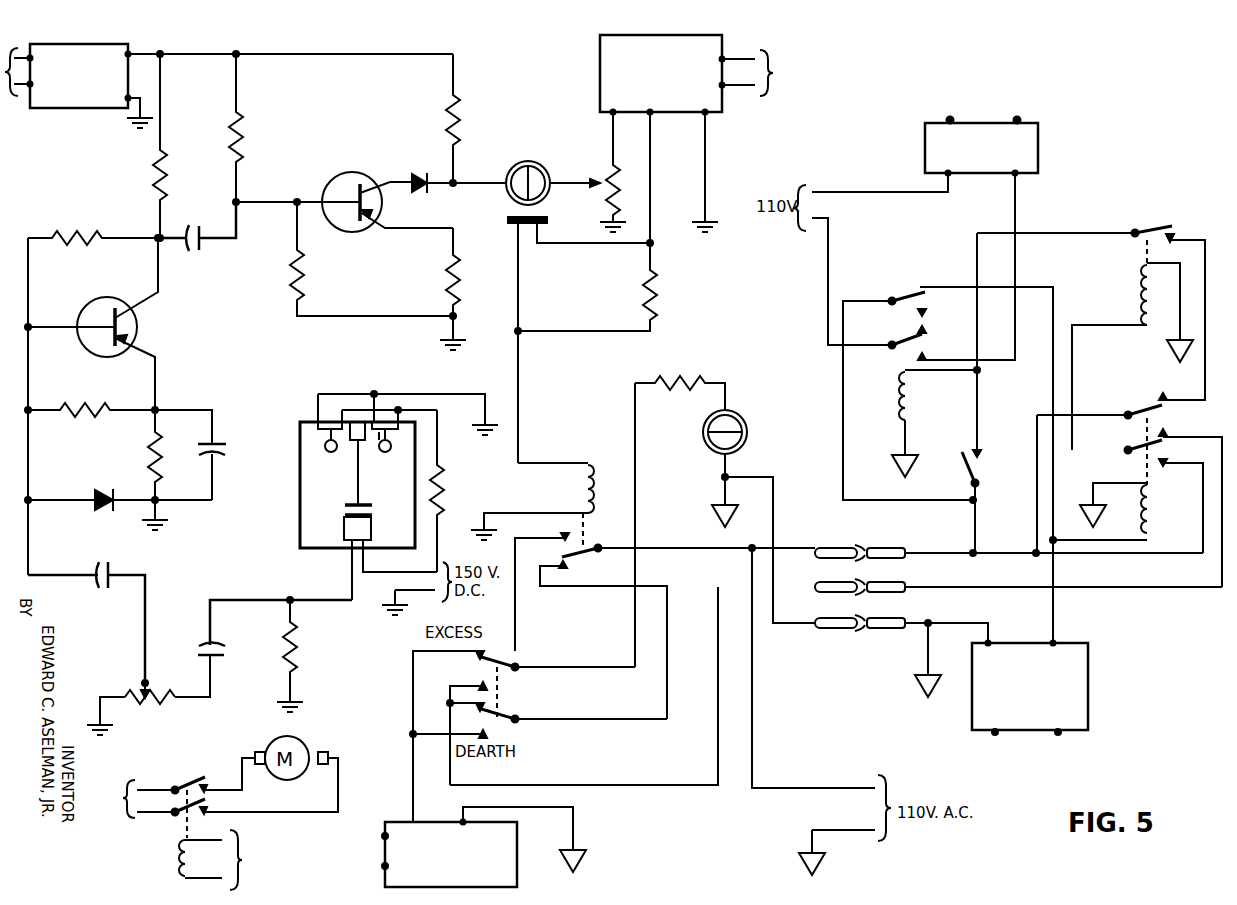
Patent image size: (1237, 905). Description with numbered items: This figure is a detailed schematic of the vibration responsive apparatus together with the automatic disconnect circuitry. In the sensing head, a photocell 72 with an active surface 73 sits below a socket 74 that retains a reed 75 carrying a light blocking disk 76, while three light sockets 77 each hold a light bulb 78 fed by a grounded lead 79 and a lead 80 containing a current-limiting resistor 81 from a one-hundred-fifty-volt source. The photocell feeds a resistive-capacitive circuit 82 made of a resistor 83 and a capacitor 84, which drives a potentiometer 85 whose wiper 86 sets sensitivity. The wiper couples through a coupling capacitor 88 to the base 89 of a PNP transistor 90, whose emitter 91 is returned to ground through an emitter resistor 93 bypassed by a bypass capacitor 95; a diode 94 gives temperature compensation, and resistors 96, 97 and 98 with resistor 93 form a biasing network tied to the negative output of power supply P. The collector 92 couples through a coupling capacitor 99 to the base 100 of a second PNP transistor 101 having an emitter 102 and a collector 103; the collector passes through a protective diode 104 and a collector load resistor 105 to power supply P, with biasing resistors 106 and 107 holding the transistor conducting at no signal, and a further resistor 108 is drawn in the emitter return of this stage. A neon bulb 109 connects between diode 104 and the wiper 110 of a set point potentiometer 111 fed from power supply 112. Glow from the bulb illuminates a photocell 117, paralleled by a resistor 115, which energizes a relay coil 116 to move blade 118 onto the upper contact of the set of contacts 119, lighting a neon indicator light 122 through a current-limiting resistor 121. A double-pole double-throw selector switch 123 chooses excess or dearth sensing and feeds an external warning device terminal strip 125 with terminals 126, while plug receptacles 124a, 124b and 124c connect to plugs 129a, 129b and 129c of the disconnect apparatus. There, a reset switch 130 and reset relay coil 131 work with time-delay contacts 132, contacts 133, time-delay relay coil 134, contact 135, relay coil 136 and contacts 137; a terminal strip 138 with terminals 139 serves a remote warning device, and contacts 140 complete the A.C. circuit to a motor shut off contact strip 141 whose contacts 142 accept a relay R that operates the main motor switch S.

The D.C. regulated power supply P is at (78, 110).
The photocell 72 is at (344, 528).
The active surface 73 is at (344, 514).
The socket 74 is at (372, 440).
The reed 75 is at (356, 468).
The light blocking disk 76 is at (345, 504).
The light sockets 77 is at (325, 432).
The light bulb 78 is at (328, 447).
The grounded lead 79 is at (426, 394).
The lead 80 is at (438, 530).
The current-limiting resistor 81 is at (442, 482).
The resistive-capacitive circuit 82 is at (256, 590).
The resistor 83 is at (298, 658).
The capacitor 84 is at (216, 645).
The potentiometer 85 is at (172, 700).
The wiper 86 is at (138, 690).
The coupling capacitor 88 is at (96, 566).
The base 89 is at (96, 338).
The PNP transistor 90 is at (97, 300).
The emitter 91 is at (138, 352).
The collector 92 is at (150, 300).
The emitter resistor 93 is at (148, 456).
The diode 94 is at (90, 505).
The bypass capacitor 95 is at (220, 440).
The resistor 96 is at (78, 415).
The resistor 97 is at (76, 234).
The resistor 98 is at (153, 175).
The coupling capacitor 99 is at (198, 238).
The base 100 is at (338, 205).
The second PNP transistor 101 is at (346, 170).
The emitter 102 is at (370, 223).
The collector 103 is at (370, 185).
The diode 104 is at (416, 178).
The collector load resistor 105 is at (460, 108).
The biasing resistor 106 is at (303, 290).
The biasing resistor 107 is at (240, 138).
The resistor 108 is at (458, 283).
The neon bulb 109 is at (527, 160).
The wiper 110 is at (600, 180).
The set point potentiometer 111 is at (606, 200).
The 150-volt D.C. regulated power supply 112 is at (598, 44).
The resistor 115 is at (657, 292).
The relay coil 116 is at (598, 468).
The photocell 117 is at (506, 223).
The blade 118 is at (590, 560).
The set of contacts 119 is at (568, 562).
The current-limiting resistor 121 is at (685, 380).
The neon indicator light 122 is at (743, 418).
The double-pole double-throw selector switch 123 is at (505, 712).
The plug receptacle 124a is at (840, 548).
The plug receptacle 124b is at (840, 582).
The connector plug receptacle 124c is at (840, 618).
The external warning device terminal strip 125 is at (467, 820).
The terminals 126 is at (385, 836).
The plug 129a is at (888, 548).
The plug 129b is at (888, 582).
The plug 129c is at (890, 618).
The reset switch 130 is at (980, 470).
The reset relay coil 131 is at (912, 390).
The time-delay relay contacts 132 is at (1145, 225).
The relay contacts 133 is at (1128, 410).
The time-delay relay coil 134 is at (1140, 308).
The relay contact 135 is at (1128, 446).
The relay coil 136 is at (1155, 518).
The relay contacts 137 is at (896, 297).
The terminal strip 138 is at (1088, 702).
The terminals 139 is at (995, 733).
The contacts 140 is at (897, 341).
The motor shut off contact strip 141 is at (1038, 150).
The contacts 142 is at (950, 120).
The main motor switch S is at (195, 778).
The relay R is at (180, 856).